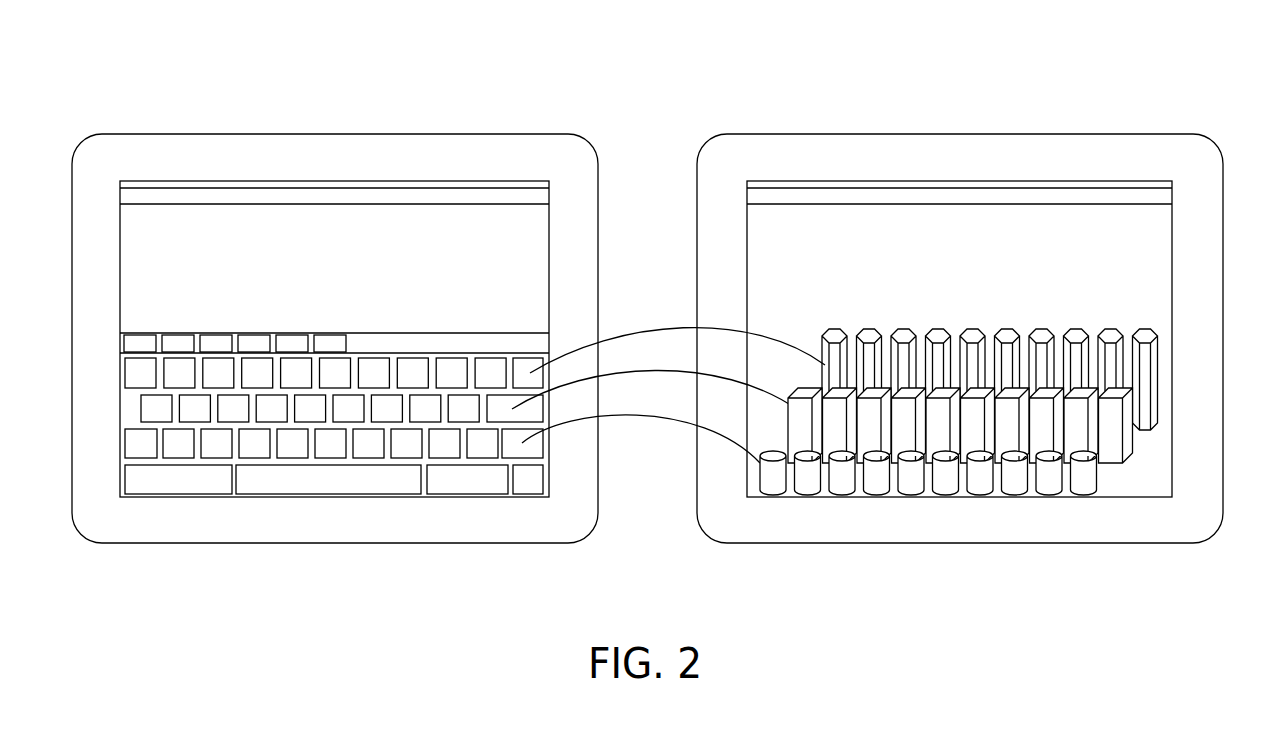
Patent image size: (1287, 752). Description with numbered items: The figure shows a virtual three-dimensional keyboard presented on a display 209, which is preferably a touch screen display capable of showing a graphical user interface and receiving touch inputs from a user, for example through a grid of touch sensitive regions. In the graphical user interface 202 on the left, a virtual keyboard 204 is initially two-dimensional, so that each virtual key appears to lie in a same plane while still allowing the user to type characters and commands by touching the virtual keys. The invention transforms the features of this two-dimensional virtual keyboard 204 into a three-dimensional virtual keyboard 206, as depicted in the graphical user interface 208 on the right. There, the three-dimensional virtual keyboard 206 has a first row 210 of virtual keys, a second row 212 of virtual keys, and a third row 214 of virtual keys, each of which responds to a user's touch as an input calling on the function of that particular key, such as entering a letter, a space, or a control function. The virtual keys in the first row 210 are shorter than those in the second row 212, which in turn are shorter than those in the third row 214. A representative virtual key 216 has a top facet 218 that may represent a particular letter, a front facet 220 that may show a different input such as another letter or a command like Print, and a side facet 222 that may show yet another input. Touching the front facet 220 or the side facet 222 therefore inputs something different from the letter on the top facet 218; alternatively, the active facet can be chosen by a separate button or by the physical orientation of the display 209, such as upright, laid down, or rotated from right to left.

The display 209 is at (483, 112).
The graphical user interface 202 is at (346, 286).
The virtual keyboard 204 is at (235, 460).
The graphical user interface 208 is at (996, 286).
The three-dimensional virtual keyboard 206 is at (1048, 490).
The first row 210 is at (1000, 525).
The second row 212 is at (1010, 409).
The third row 214 is at (1157, 352).
The virtual key 216 is at (898, 397).
The top facet 218 is at (910, 396).
The front facet 220 is at (898, 420).
The side facet 222 is at (917, 443).